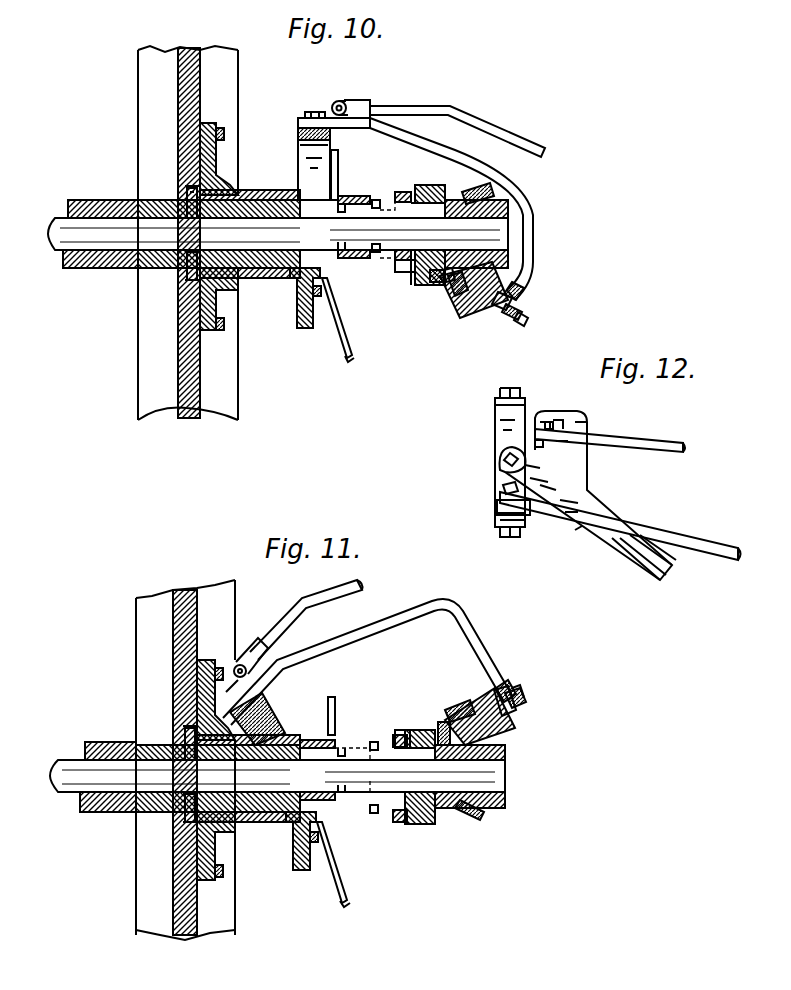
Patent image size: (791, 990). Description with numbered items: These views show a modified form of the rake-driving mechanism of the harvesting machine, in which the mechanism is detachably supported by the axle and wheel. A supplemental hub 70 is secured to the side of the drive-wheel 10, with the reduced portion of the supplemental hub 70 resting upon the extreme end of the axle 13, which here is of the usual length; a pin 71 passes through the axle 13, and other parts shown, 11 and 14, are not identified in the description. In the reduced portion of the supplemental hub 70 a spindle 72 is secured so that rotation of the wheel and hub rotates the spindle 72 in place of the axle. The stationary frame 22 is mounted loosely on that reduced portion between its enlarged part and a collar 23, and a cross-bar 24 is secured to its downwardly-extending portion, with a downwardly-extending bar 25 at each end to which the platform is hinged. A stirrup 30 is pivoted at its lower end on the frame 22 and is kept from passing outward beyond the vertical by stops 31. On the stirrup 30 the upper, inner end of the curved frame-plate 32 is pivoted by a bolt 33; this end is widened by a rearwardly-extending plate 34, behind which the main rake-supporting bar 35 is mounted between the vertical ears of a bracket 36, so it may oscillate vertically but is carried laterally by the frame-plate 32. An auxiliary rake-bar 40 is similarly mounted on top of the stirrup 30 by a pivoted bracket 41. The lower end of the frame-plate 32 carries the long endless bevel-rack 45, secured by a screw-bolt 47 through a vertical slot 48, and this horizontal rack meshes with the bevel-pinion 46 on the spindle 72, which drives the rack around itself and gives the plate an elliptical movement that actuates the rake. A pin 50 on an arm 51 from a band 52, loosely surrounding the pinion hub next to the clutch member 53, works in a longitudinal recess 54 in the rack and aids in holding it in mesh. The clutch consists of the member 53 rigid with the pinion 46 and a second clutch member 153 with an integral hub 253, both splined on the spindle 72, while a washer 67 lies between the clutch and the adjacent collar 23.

In FIG. 10, the drive-wheel 10 is at (228, 78).
In FIG. 11, the drive-wheel 10 is at (148, 878).
In FIG. 10, the collar 11 is at (108, 200).
In FIG. 11, the collar 11 is at (118, 812).
In FIG. 10, the axle 13 is at (55, 230).
In FIG. 11, the axle 13 is at (70, 792).
In FIG. 10, the key 14 is at (188, 198).
In FIG. 11, the key 14 is at (185, 814).
In FIG. 10, the stationary frame 22 is at (298, 320).
In FIG. 11, the stationary frame 22 is at (293, 850).
In FIG. 10, the collar 23 is at (350, 196).
In FIG. 11, the collar 23 is at (352, 742).
In FIG. 10, the cross-bar 24 is at (325, 320).
In FIG. 11, the cross-bar 24 is at (318, 860).
In FIG. 10, the downwardly-extending bar 25 is at (345, 356).
In FIG. 11, the downwardly-extending bar 25 is at (340, 901).
In FIG. 10, the stirrup 30 is at (334, 156).
In FIG. 11, the stirrup 30 is at (275, 710).
In FIG. 12, the stirrup 30 is at (495, 413).
In FIG. 10, the stop 31 is at (337, 170).
In FIG. 11, the stop 31 is at (334, 698).
In FIG. 10, the curved frame-plate 32 is at (535, 208).
In FIG. 11, the curved frame-plate 32 is at (378, 635).
In FIG. 12, the curved frame-plate 32 is at (585, 504).
In FIG. 12, the bolt 33 is at (500, 462).
In FIG. 12, the rearwardly-extending plate 34 is at (587, 418).
In FIG. 10, the main rake-supporting bar 35 is at (508, 140).
In FIG. 11, the main rake-supporting bar 35 is at (335, 598).
In FIG. 12, the main rake-supporting bar 35 is at (628, 452).
In FIG. 10, the bracket 36 is at (347, 106).
In FIG. 11, the bracket 36 is at (242, 663).
In FIG. 12, the bracket 36 is at (556, 421).
In FIG. 12, the auxiliary rake-bar 40 is at (682, 560).
In FIG. 12, the bracket 41 is at (527, 518).
In FIG. 10, the endless bevel-rack 45 is at (470, 305).
In FIG. 11, the endless bevel-rack 45 is at (505, 732).
In FIG. 10, the bevel-pinion 46 is at (470, 196).
In FIG. 11, the bevel-pinion 46 is at (466, 820).
In FIG. 10, the screw-bolt 47 is at (528, 320).
In FIG. 11, the screw-bolt 47 is at (518, 694).
In FIG. 10, the vertical slot 48 is at (518, 304).
In FIG. 11, the vertical slot 48 is at (518, 708).
In FIG. 10, the pin 50 is at (448, 280).
In FIG. 11, the pin 50 is at (458, 710).
In FIG. 10, the arm 51 is at (432, 276).
In FIG. 11, the arm 51 is at (440, 732).
In FIG. 10, the band 52 is at (432, 188).
In FIG. 11, the band 52 is at (435, 824).
In FIG. 10, the clutch member 53 is at (402, 272).
In FIG. 11, the clutch member 53 is at (402, 730).
In FIG. 10, the longitudinal recess 54 is at (455, 292).
In FIG. 10, the washer 67 is at (352, 196).
In FIG. 11, the washer 67 is at (355, 752).
In FIG. 10, the supplemental hub 70 is at (243, 195).
In FIG. 11, the supplemental hub 70 is at (292, 735).
In FIG. 10, the pin 71 is at (282, 276).
In FIG. 11, the pin 71 is at (266, 818).
In FIG. 10, the spindle 72 is at (318, 222).
In FIG. 11, the spindle 72 is at (360, 818).
In FIG. 10, the clutch member 153 is at (398, 192).
In FIG. 11, the clutch member 153 is at (405, 824).
In FIG. 10, the hub 253 is at (378, 200).
In FIG. 11, the hub 253 is at (380, 815).